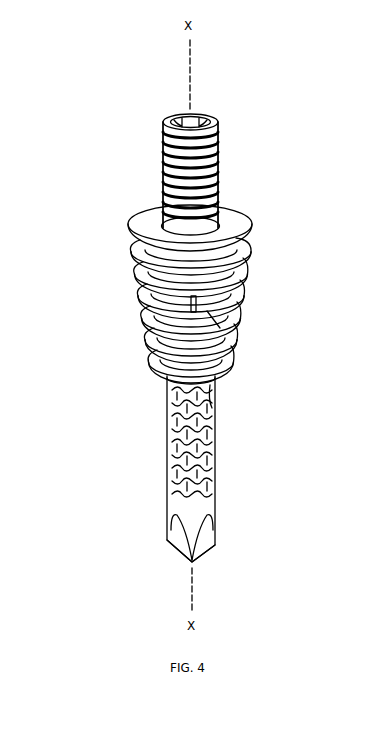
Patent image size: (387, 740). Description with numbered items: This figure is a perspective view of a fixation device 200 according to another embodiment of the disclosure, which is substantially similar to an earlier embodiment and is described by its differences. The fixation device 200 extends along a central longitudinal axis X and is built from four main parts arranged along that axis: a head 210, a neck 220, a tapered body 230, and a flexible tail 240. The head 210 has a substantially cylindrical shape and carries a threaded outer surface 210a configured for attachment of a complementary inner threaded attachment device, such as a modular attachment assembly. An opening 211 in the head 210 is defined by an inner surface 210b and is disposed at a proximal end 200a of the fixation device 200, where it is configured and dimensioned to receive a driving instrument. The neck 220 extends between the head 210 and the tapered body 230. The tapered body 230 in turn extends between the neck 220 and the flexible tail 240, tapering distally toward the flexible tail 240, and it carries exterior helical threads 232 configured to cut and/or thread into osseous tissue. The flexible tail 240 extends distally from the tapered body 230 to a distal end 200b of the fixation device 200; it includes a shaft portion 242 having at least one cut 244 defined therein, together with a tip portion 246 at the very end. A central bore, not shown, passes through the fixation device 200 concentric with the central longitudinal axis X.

The fixation device 200 is at (98, 113).
The proximal end 200a is at (227, 121).
The distal end 200b is at (214, 564).
The head 210 is at (247, 150).
The threaded outer surface 210a is at (162, 178).
The inner surface 210b is at (185, 113).
The opening 211 is at (198, 117).
The neck 220 is at (226, 212).
The tapered body 230 is at (273, 264).
The exterior helical threads 232 is at (150, 300).
The flexible tail 240 is at (239, 437).
The shaft portion 242 is at (168, 448).
The cut 244 is at (208, 398).
The tip portion 246 is at (168, 528).